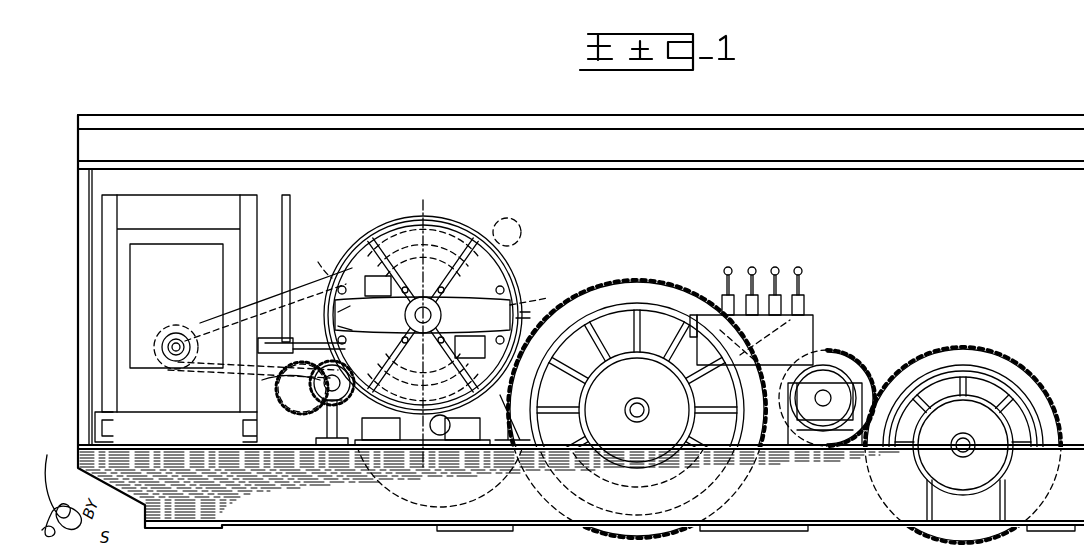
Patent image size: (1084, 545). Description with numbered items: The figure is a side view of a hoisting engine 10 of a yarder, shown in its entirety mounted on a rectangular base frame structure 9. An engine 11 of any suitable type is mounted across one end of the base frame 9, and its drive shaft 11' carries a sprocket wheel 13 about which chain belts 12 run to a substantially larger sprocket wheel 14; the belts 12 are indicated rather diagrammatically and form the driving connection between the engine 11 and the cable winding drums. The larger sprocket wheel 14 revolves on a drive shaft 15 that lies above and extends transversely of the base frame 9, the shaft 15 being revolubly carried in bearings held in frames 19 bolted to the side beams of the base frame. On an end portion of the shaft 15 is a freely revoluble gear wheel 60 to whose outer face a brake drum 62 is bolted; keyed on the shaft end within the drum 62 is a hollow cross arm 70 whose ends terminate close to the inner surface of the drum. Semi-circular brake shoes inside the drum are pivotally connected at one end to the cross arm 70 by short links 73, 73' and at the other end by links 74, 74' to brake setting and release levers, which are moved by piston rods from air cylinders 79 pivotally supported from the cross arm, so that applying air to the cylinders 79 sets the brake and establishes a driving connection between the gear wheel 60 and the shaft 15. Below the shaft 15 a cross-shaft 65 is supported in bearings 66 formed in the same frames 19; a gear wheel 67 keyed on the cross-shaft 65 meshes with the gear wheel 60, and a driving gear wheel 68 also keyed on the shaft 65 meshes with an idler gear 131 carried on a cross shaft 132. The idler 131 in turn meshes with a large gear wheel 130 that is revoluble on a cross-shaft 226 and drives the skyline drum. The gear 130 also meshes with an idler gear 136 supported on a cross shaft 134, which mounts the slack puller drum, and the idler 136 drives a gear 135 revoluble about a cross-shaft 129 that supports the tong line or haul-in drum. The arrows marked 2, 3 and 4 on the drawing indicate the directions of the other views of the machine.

The section line 2- 2 is at (33, 178).
The section line 3- 3 is at (426, 215).
The section line 4- 4 is at (263, 388).
The base frame structure 9 is at (256, 516).
The hoisting engine 10 is at (588, 278).
The engine 11 is at (147, 318).
The drive shaft 11' is at (174, 321).
The chain belts 12 is at (288, 262).
The sprocket wheel 13 is at (198, 372).
The sprocket wheel 14 is at (338, 312).
The drive shaft 15 is at (507, 232).
The frame 19 is at (376, 440).
The gear wheel 60 is at (478, 224).
The brake drum 62 is at (510, 262).
The cross-shaft 65 is at (330, 402).
The bearing 66 is at (278, 342).
The gear wheel 67 is at (262, 380).
The driving gear wheel 68 is at (300, 412).
The hollow cross arm 70 is at (496, 292).
The short link 73 is at (751, 316).
The short link 73' is at (442, 287).
The link 74 is at (323, 326).
The link 74' is at (543, 288).
The air cylinder 79 is at (532, 356).
The cross-shaft 129 is at (962, 454).
The large gear wheel 130 is at (640, 288).
The idler gear 131 is at (476, 500).
The cross shaft 132 is at (466, 442).
The cross shaft 134 is at (823, 408).
The gear 135 is at (988, 348).
The idler gear 136 is at (864, 356).
The cross-shaft 226 is at (636, 424).